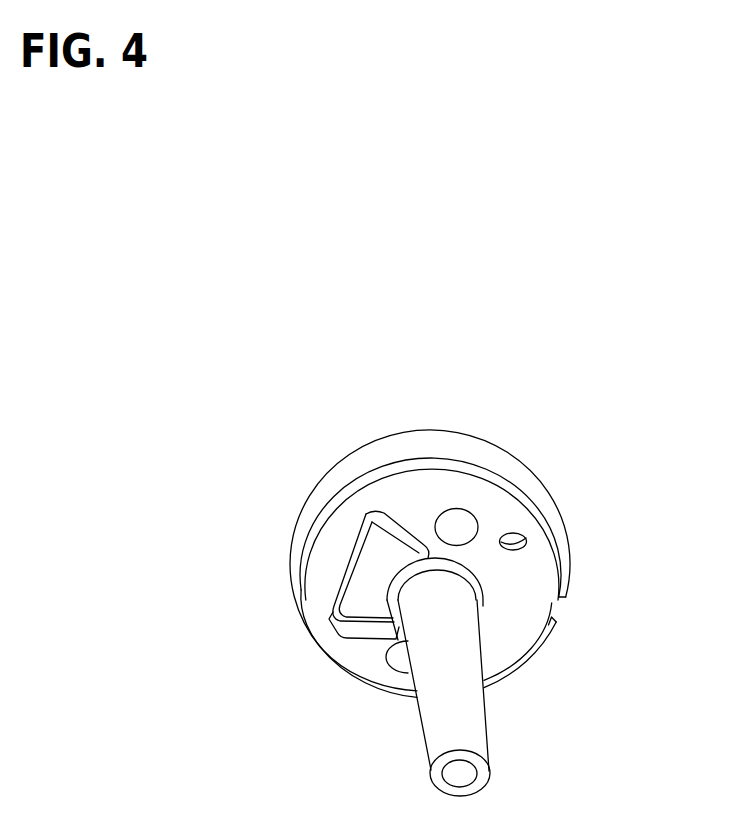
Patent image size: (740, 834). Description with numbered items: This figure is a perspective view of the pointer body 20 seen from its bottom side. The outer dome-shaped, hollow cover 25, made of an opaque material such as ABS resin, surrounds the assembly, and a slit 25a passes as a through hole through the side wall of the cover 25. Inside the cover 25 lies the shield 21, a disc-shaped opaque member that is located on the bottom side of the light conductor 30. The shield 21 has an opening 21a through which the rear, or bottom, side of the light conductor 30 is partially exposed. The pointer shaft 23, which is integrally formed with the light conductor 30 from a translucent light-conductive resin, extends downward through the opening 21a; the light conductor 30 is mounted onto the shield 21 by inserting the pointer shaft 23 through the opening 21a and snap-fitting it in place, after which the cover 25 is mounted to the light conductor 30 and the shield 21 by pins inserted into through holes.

The pointer body 20 is at (521, 426).
The cover 25 is at (357, 462).
The slit 25a is at (557, 605).
The shield 21 is at (347, 652).
The opening 21a is at (353, 561).
The light conductor 30 is at (367, 575).
The pointer shaft 23 is at (485, 744).